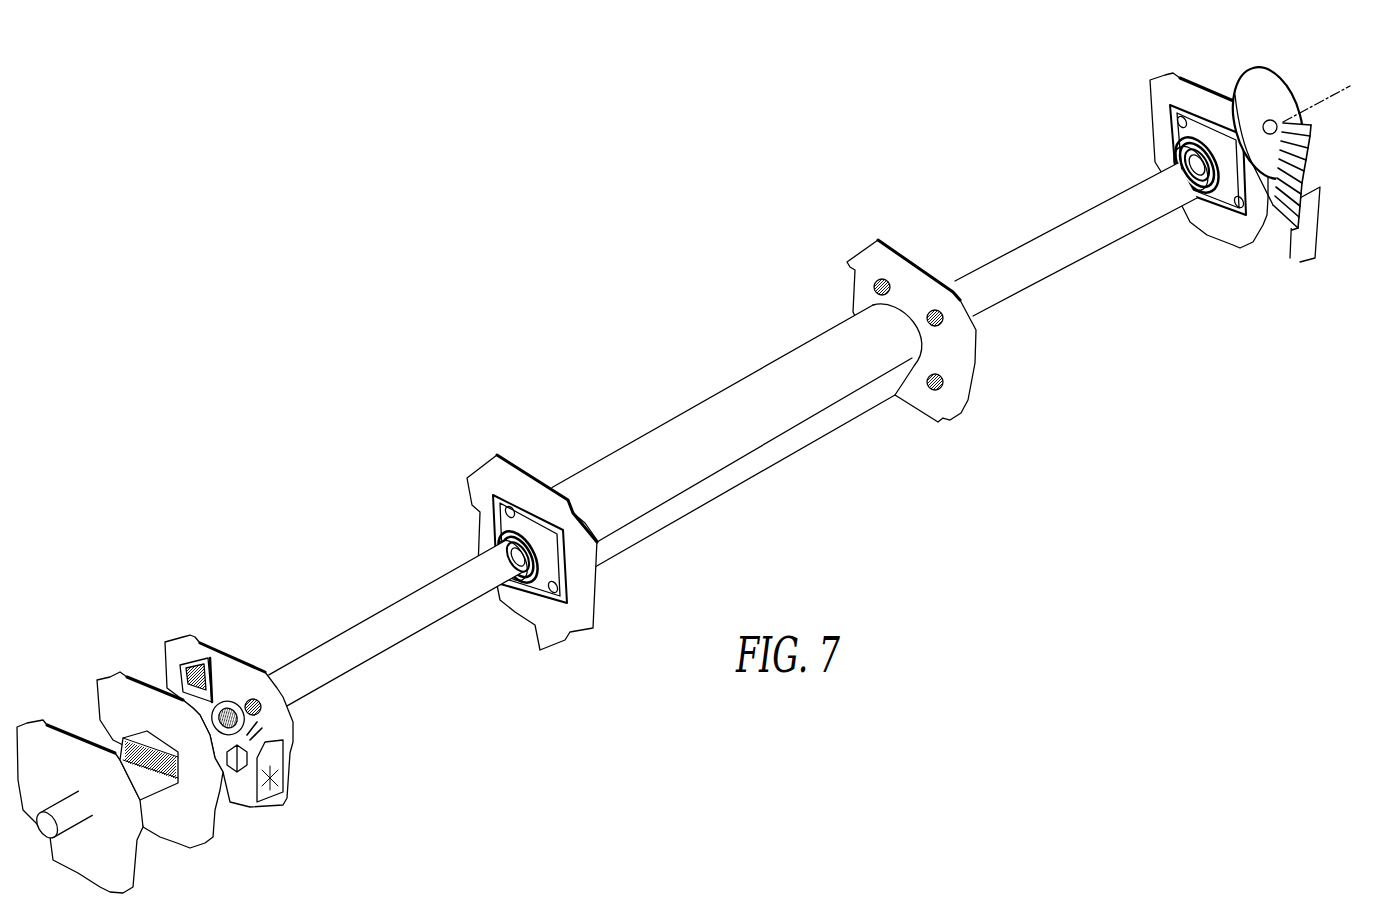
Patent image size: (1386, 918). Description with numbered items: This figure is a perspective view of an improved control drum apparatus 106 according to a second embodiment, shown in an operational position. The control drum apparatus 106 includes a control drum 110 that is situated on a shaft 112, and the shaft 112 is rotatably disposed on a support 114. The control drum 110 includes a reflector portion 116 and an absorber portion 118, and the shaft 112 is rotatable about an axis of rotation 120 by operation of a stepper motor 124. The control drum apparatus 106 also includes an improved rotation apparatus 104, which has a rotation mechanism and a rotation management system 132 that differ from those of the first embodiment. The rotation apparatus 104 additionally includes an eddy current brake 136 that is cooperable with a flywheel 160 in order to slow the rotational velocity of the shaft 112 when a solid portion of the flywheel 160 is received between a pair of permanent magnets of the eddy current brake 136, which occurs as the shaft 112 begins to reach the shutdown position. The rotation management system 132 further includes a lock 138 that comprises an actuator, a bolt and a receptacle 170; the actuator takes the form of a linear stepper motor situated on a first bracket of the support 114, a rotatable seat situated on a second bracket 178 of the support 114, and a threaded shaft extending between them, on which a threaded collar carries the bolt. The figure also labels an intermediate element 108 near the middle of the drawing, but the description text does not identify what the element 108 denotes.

The rotation apparatus 104 is at (1164, 171).
The control drum apparatus 106 is at (401, 620).
The intermediate mounting plate 108 is at (864, 206).
The control drum 110 is at (741, 433).
The shaft 112 is at (402, 637).
The support 114 is at (546, 633).
The reflector portion 116 is at (708, 418).
The absorber portion 118 is at (790, 444).
The axis of rotation 120 is at (1327, 103).
The stepper motor 124 is at (133, 760).
The rotation management system 132 is at (1297, 128).
The eddy current brake 136 is at (1300, 205).
The lock 138 is at (248, 721).
The flywheel 160 is at (1303, 91).
The receptacle 170 is at (220, 650).
The second bracket 178 is at (281, 790).